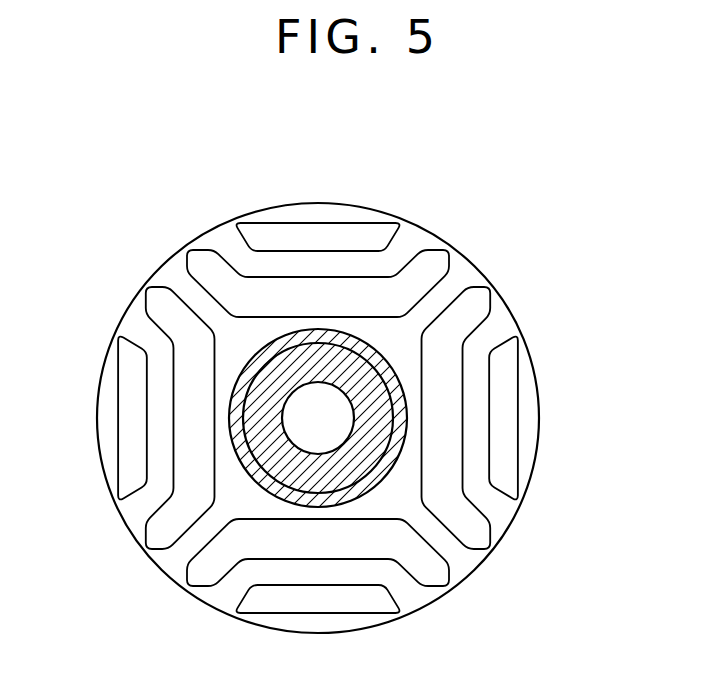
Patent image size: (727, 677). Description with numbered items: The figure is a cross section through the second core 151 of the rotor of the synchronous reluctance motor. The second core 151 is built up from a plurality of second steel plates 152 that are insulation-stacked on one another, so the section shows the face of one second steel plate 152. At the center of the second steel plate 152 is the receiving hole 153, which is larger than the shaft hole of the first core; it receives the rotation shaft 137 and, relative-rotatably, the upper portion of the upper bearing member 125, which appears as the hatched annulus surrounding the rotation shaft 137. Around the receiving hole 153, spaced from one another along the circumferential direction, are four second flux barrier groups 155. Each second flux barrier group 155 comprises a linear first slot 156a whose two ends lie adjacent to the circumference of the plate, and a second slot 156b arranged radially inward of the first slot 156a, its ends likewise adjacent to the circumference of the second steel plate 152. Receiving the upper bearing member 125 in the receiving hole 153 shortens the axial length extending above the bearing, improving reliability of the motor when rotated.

The second core 151 is at (130, 266).
The second steel plate 152 is at (458, 288).
The second flux barrier group 155 is at (541, 177).
The first slot 156a is at (386, 221).
The second slot 156b is at (447, 251).
The upper bearing member 125 is at (237, 415).
The receiving hole 153 is at (382, 444).
The rotation shaft 137 is at (368, 392).